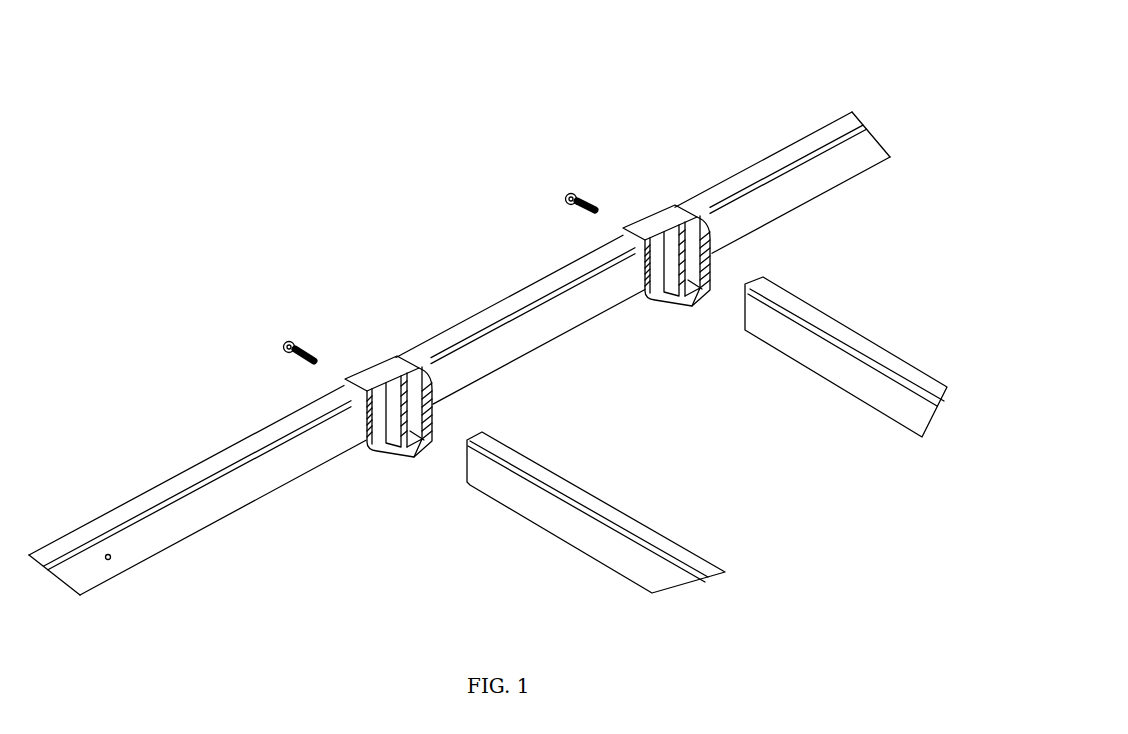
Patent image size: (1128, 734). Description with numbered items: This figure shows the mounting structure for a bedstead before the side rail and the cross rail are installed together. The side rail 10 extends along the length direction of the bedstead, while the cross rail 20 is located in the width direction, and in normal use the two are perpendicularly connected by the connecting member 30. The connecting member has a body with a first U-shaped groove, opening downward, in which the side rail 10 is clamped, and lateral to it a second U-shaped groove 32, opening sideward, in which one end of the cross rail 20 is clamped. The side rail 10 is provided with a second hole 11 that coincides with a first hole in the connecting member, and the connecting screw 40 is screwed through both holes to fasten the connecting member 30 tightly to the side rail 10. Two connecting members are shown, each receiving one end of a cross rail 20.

The side rail 10 is at (795, 153).
The second hole 11 is at (111, 558).
The cross rail 20 is at (860, 342).
The connecting member 30 is at (670, 212).
The second U-shaped groove 32 is at (392, 452).
The connecting screw 40 is at (562, 192).